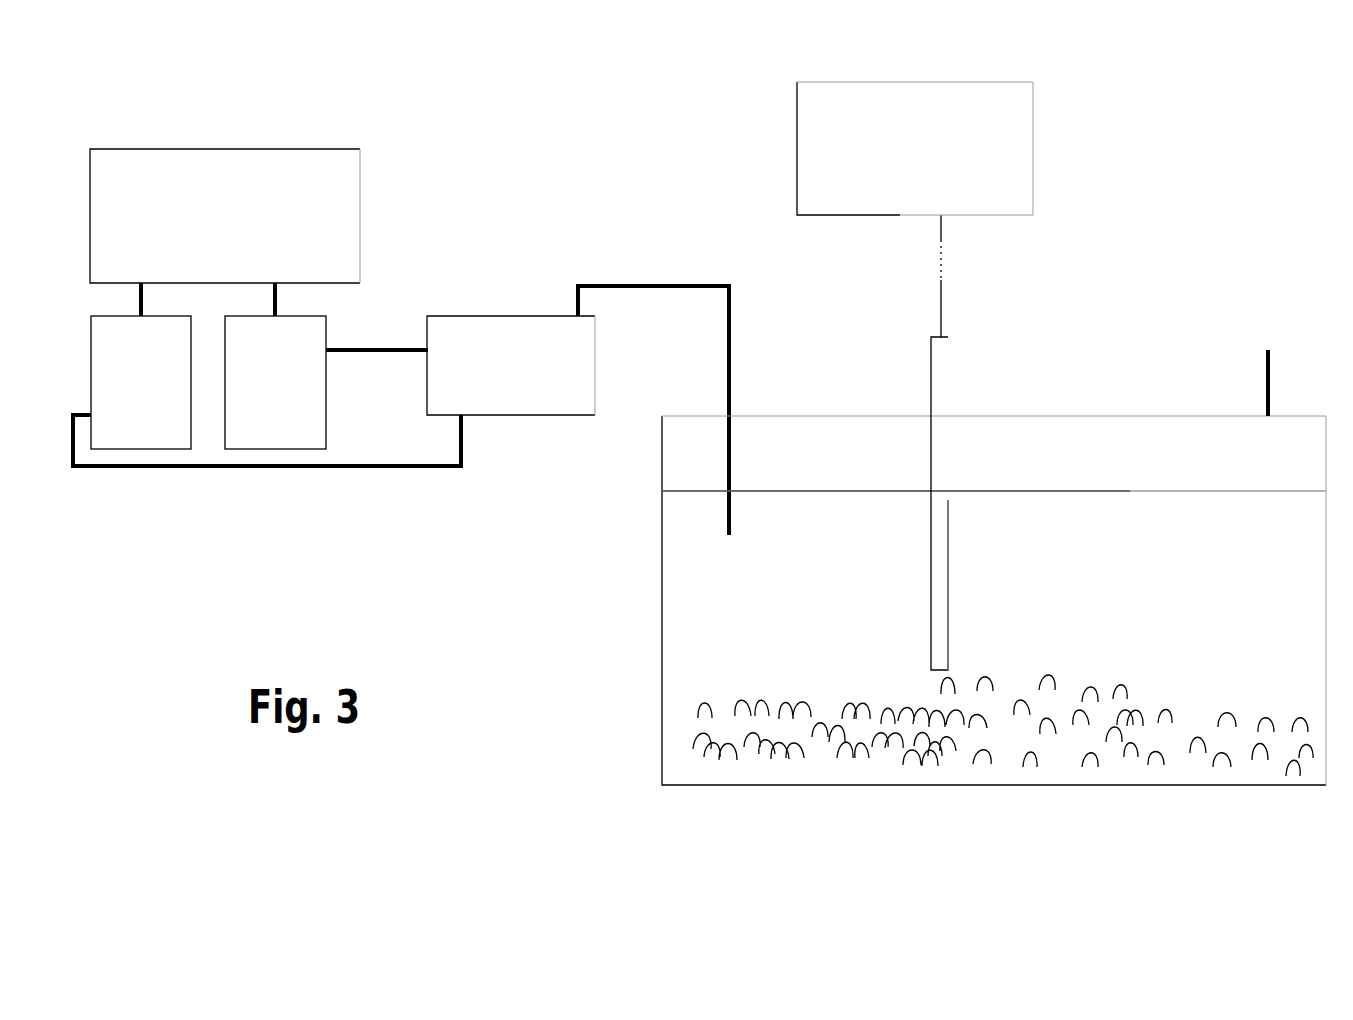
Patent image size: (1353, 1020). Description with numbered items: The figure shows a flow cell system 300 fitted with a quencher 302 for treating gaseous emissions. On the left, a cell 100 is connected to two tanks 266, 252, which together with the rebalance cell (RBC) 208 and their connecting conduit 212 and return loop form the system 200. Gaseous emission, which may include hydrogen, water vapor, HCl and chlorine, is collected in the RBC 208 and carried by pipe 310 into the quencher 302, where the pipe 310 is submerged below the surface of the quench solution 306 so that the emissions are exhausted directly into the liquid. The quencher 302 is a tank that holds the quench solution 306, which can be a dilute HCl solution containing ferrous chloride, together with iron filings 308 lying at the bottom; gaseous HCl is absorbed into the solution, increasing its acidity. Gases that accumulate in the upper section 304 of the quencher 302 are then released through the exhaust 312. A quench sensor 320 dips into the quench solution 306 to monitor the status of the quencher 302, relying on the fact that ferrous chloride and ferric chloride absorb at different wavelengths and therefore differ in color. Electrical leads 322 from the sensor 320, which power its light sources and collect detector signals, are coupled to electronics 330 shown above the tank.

The electrochemical system 300 is at (277, 99).
The cell 100 is at (225, 216).
The tank 266 is at (141, 366).
The tank 252 is at (275, 366).
The conduit 212 is at (393, 347).
The rebalance cell 208 is at (511, 365).
The system 200 is at (208, 483).
The pipe 310 is at (667, 283).
The quencher 302 is at (662, 498).
The section 304 is at (994, 469).
The quench solution 306 is at (994, 549).
The iron filings 308 is at (915, 755).
The quench sensor 320 is at (948, 400).
The electrical leads 322 is at (939, 298).
The electronics 330 is at (915, 148).
The exhaust 312 is at (1291, 352).